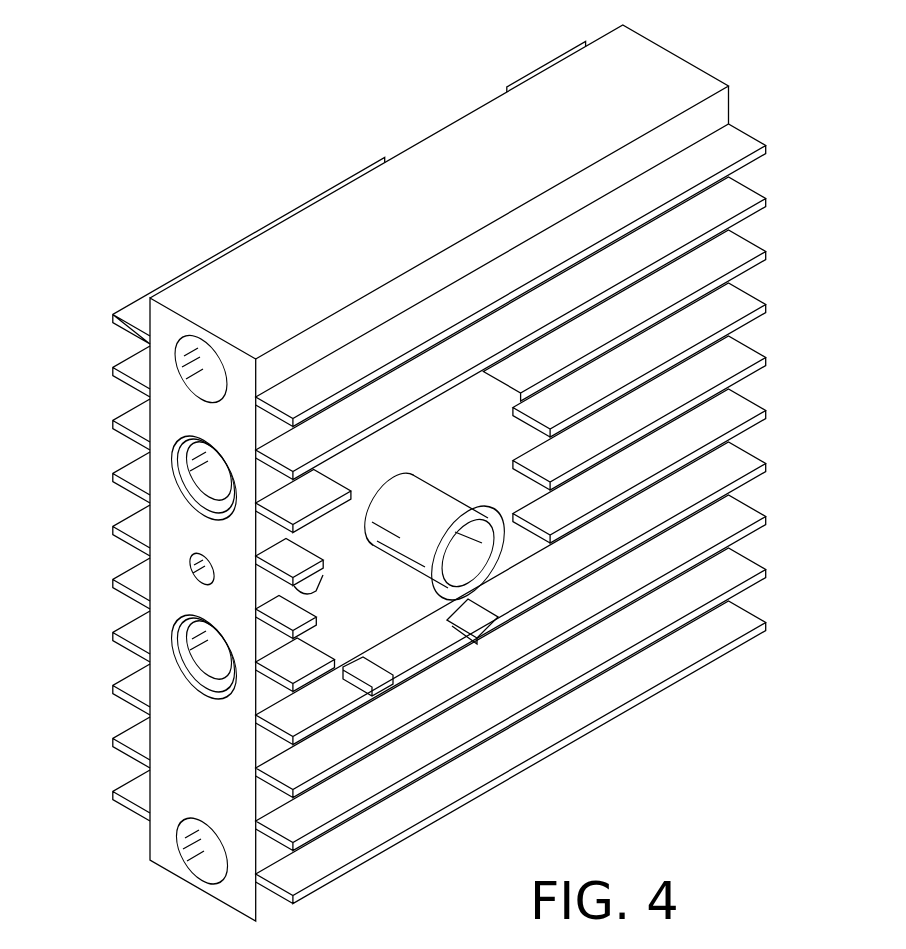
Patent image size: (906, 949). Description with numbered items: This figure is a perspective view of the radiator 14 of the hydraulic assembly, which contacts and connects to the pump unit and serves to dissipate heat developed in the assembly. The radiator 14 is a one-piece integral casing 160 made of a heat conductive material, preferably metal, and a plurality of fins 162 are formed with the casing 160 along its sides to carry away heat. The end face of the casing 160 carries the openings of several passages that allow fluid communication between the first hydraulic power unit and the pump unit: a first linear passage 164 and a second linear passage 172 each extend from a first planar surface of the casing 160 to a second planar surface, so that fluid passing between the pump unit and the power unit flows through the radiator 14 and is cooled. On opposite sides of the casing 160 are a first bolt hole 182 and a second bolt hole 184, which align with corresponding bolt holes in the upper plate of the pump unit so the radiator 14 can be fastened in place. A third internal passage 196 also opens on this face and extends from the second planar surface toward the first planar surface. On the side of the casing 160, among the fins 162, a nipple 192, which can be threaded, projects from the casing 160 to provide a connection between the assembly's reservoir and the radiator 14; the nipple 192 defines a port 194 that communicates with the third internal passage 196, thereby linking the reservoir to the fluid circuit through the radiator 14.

The radiator 14 is at (338, 100).
The casing 160 is at (660, 62).
The fins 162 is at (735, 138).
The first bolt hole 182 is at (188, 383).
The first linear passage 164 is at (188, 482).
The third internal passage 196 is at (198, 578).
The second linear passage 172 is at (190, 668).
The second bolt hole 184 is at (188, 874).
The nipple 192 is at (427, 533).
The port 194 is at (455, 556).